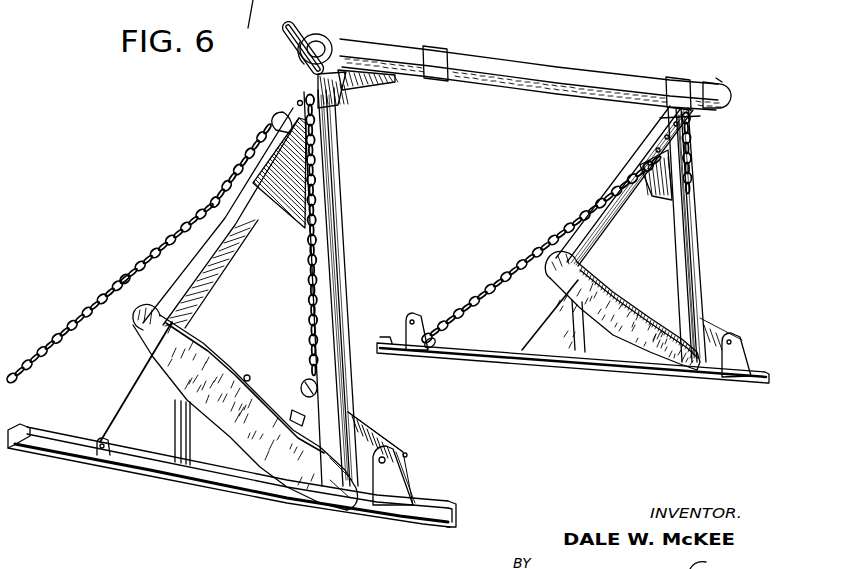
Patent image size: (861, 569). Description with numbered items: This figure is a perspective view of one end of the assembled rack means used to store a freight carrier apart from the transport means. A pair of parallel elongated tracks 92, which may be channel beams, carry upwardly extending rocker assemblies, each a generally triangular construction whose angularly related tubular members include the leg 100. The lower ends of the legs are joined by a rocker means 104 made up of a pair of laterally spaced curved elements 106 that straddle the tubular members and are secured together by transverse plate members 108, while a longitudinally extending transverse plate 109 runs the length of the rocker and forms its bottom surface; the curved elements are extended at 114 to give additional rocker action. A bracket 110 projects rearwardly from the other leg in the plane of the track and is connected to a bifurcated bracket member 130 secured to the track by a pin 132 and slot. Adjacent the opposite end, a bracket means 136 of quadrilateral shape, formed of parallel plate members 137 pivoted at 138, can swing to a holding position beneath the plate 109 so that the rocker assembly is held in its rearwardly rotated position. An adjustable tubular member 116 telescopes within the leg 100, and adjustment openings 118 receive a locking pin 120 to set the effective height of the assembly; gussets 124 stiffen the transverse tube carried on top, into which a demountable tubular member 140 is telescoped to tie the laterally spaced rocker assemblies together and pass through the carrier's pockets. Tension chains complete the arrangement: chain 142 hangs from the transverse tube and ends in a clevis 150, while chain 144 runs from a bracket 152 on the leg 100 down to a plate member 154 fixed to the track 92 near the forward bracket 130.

The elongated tracks 92 is at (160, 474).
The tubular member 100 is at (605, 233).
The rocker means 104 is at (268, 465).
The curved elements 106 is at (230, 350).
The transverse plate members 108 is at (297, 413).
The longitudinally extending transverse plate 109 is at (367, 503).
The bracket 110 is at (363, 433).
The extended ends of rocker elements 114 is at (143, 321).
The adjustable tubular member 116 is at (330, 104).
The adjustment openings 118 is at (297, 101).
The locking pin 120 is at (272, 125).
The gussets 124 is at (372, 80).
The bifurcated bracket member 130 is at (413, 473).
The pin 132 is at (387, 458).
The bracket means 136 is at (123, 405).
The parallel plate members 137 is at (152, 440).
The pivot 138 is at (100, 445).
The demountable tubular members 140 is at (518, 62).
The chain 142 is at (320, 288).
The chain 144 is at (115, 287).
The clevis 150 is at (322, 385).
The bracket 152 is at (660, 140).
The plate member 154 is at (424, 348).